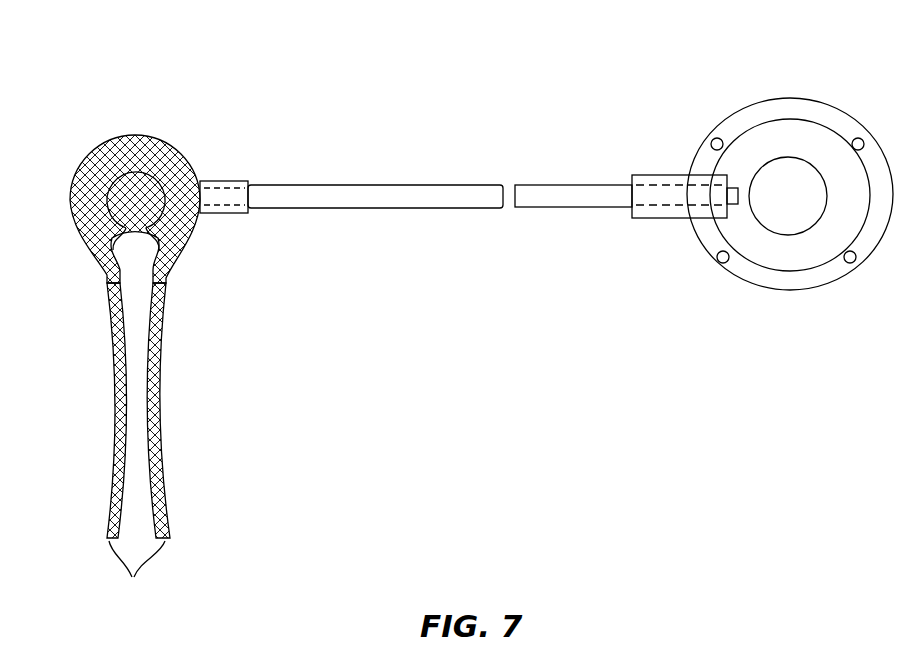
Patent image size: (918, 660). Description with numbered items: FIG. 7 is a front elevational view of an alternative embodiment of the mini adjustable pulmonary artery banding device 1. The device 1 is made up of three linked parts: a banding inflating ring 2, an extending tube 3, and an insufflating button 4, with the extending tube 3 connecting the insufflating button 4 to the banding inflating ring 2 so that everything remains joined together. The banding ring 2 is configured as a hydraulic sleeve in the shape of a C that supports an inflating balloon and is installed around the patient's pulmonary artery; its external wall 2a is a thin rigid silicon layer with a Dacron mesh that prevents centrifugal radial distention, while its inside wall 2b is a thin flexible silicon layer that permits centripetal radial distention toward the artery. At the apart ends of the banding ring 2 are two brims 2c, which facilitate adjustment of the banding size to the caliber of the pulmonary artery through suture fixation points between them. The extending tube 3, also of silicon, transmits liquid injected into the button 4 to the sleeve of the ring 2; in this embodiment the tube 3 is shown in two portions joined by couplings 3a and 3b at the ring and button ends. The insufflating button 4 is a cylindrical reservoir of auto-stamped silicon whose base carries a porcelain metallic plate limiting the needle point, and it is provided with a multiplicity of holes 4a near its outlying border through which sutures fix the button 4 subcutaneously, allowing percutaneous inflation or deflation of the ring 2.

The pulmonary artery banding device 1 is at (458, 126).
The banding inflating ring 2 is at (186, 129).
The external wall 2a is at (78, 221).
The inside wall 2b is at (105, 257).
The brims 2c is at (137, 572).
The extending tube 3 is at (353, 185).
The first shaft coupling 3a is at (213, 217).
The second shaft coupling 3b is at (643, 219).
The insufflating button 4 is at (696, 153).
The holes 4a is at (869, 131).